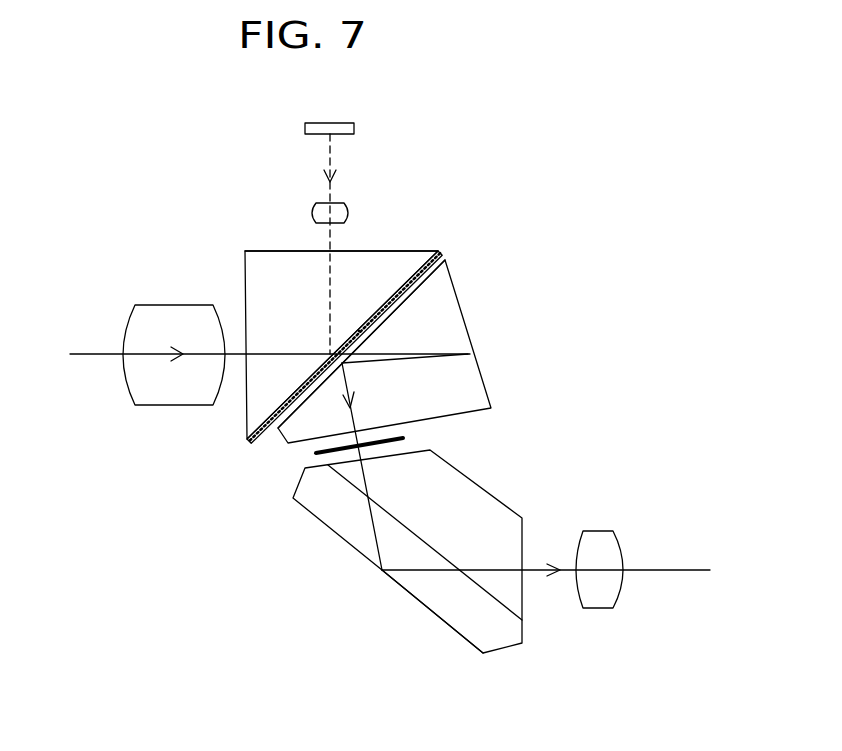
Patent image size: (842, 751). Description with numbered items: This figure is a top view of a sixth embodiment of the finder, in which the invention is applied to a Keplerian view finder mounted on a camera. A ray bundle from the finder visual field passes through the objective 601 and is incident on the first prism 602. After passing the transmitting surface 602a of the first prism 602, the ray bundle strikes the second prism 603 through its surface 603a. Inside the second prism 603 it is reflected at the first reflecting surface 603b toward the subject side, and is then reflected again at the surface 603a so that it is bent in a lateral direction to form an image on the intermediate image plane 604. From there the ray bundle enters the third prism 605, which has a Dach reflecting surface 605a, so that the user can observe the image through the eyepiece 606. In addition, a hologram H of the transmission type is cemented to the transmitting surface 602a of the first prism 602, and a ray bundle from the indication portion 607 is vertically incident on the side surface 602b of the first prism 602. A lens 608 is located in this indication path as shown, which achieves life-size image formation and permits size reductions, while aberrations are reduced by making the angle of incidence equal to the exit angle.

The objective 601 is at (170, 304).
The first prism 602 is at (237, 247).
The transmitting surface 602a is at (410, 278).
The side surface 602b is at (372, 250).
The second prism 603 is at (468, 313).
The surface 603a is at (428, 280).
The first reflecting surface 603b is at (470, 346).
The intermediate image plane 604 is at (405, 436).
The third prism 605 is at (353, 567).
The Dach reflecting surface 605a is at (448, 602).
The eyepiece 606 is at (593, 540).
The indication portion 607 is at (330, 122).
The lens 608 is at (312, 208).
The hologram H is at (360, 330).